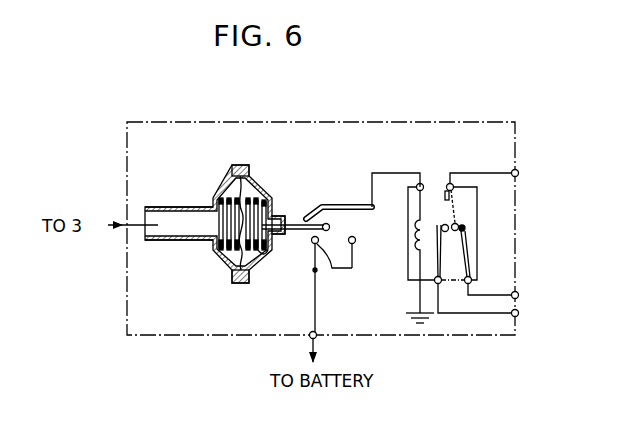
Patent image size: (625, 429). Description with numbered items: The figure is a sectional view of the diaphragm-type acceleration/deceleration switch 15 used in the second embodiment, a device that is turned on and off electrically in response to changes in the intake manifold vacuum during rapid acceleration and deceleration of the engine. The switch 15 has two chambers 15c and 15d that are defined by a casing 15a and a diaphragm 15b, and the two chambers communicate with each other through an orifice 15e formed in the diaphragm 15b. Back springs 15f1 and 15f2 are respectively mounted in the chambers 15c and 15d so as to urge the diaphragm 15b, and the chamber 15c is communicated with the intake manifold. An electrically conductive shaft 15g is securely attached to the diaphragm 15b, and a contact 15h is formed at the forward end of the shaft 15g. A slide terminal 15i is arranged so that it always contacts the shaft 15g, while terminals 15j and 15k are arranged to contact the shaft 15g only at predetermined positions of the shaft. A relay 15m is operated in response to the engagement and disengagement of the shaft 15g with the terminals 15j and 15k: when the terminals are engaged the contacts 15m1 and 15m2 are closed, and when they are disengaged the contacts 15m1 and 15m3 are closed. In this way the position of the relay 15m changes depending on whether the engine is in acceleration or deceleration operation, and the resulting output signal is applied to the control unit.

The acceleration/deceleration switch 15 is at (381, 122).
The casing 15a is at (168, 207).
The diaphragm 15b is at (244, 180).
The chamber 15c is at (224, 262).
The chamber 15d is at (252, 268).
The orifice 15e is at (272, 216).
The back spring 15f1 is at (232, 196).
The back spring 15f2 is at (253, 196).
The electrically conductive shaft 15g is at (266, 242).
The contact 15h is at (331, 228).
The slide terminal 15i is at (311, 213).
The terminal 15j is at (332, 268).
The terminal 15k is at (354, 243).
The relay 15m is at (466, 185).
The relay contact 15m1 is at (458, 226).
The relay contact 15m2 is at (465, 229).
The relay contact 15m3 is at (441, 259).